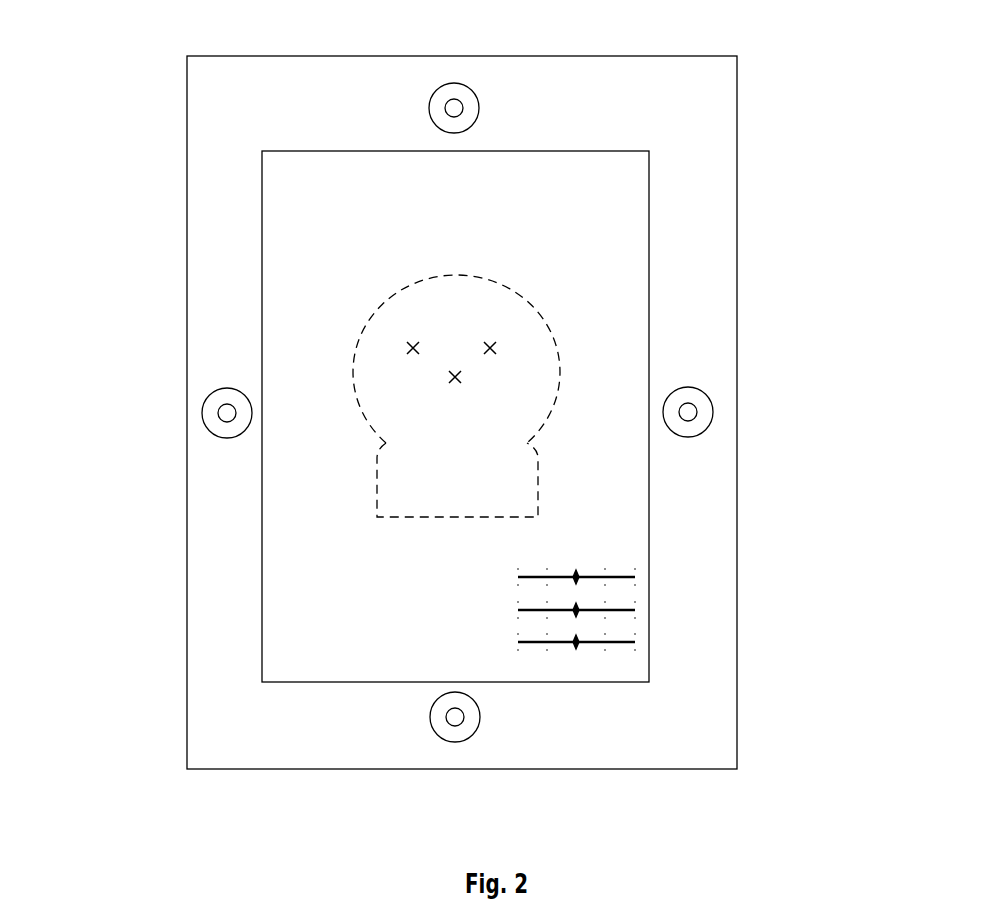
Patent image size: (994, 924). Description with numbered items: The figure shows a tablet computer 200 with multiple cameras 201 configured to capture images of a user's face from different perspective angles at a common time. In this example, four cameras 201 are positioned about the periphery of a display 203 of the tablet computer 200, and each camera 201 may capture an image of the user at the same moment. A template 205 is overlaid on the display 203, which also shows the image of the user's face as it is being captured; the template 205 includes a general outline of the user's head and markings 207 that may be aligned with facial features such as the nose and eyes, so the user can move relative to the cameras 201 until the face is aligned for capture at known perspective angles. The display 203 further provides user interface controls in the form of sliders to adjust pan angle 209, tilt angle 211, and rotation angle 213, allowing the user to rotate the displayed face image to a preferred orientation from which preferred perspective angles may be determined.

The tablet computer 200 is at (755, 278).
The cameras 201 is at (467, 87).
The display 203 is at (307, 562).
The template 205 is at (455, 415).
The markings 207 is at (413, 348).
The pan angle slider 209 is at (635, 577).
The tilt angle slider 211 is at (635, 610).
The rotation angle slider 213 is at (635, 642).